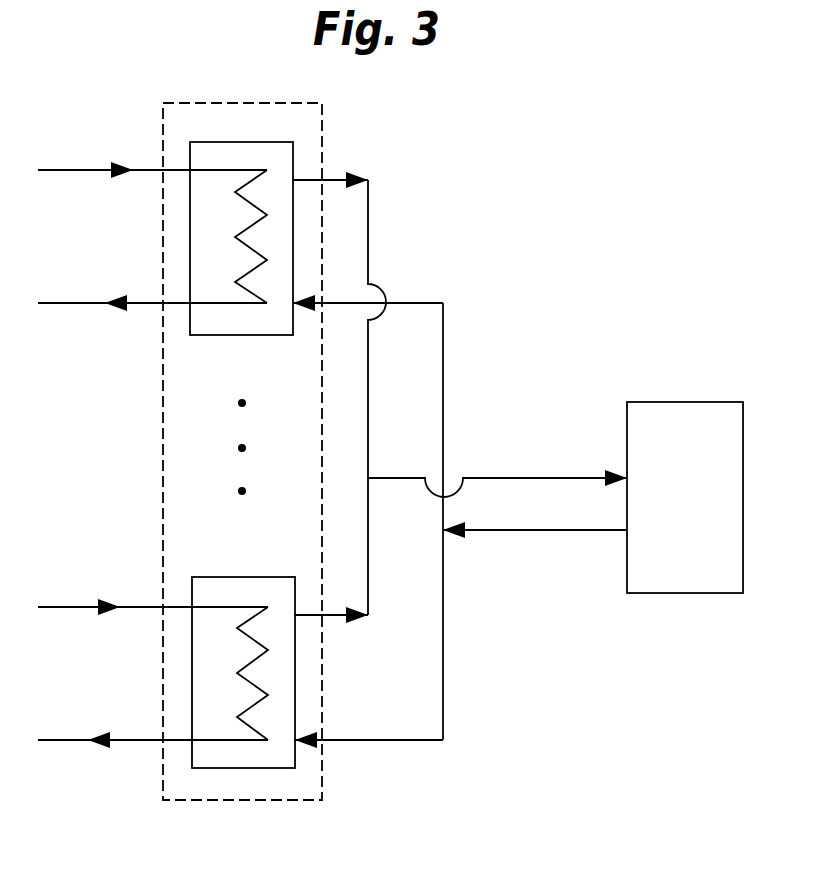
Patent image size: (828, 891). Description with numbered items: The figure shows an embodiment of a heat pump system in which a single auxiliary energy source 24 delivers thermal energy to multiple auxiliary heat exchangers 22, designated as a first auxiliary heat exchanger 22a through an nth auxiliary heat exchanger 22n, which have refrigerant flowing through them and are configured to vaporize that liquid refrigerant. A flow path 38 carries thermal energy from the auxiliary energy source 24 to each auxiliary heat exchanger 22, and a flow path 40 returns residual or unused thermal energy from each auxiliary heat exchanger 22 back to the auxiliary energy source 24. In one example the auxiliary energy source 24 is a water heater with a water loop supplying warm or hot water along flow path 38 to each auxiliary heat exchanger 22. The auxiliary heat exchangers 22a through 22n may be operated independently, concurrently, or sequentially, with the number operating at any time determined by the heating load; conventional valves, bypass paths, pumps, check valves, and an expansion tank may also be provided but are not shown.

The auxiliary heat exchangers 22 is at (238, 103).
The first auxiliary heat exchanger 22a is at (190, 247).
The nth auxiliary heat exchanger 22n is at (192, 685).
The auxiliary energy source 24 is at (671, 512).
The flow path 38 is at (498, 532).
The flow path 40 is at (492, 477).